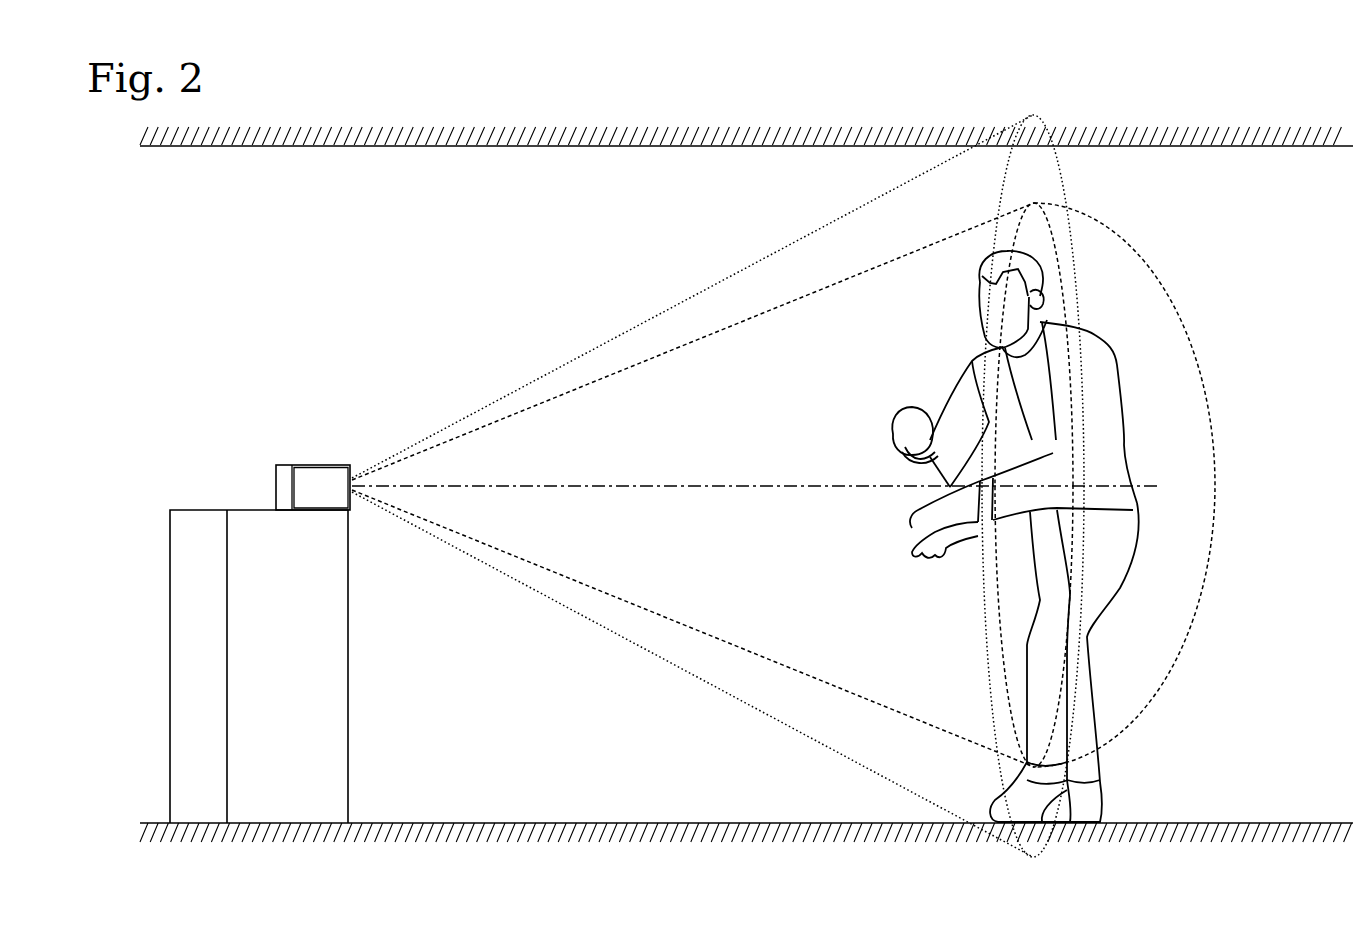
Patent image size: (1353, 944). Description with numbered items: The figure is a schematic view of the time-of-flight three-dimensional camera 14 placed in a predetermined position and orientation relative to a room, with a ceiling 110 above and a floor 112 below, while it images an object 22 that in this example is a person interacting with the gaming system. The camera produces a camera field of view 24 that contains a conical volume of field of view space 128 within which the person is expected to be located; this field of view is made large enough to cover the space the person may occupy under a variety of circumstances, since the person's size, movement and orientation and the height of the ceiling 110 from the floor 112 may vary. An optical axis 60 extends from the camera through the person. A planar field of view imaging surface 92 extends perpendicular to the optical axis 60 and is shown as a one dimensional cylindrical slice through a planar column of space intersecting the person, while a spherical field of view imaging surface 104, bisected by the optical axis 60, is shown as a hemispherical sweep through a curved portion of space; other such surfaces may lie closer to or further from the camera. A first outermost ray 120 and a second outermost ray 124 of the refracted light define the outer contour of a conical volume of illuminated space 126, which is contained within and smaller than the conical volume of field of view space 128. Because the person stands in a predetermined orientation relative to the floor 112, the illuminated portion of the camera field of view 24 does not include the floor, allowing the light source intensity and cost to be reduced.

The TOF 3D camera 14 is at (306, 497).
The object 22 is at (925, 368).
The camera field of view 24 is at (650, 318).
The optical axis 60 is at (555, 484).
The planar field of view imaging surface 92 is at (1062, 250).
The spherical field of view imaging surface 104 is at (1193, 350).
The ceiling 110 is at (405, 148).
The floor 112 is at (505, 822).
The first outermost ray 120 is at (583, 388).
The second outermost ray 124 is at (563, 577).
The conical volume of illuminated space 126 is at (801, 416).
The conical volume of field of view space 128 is at (856, 250).